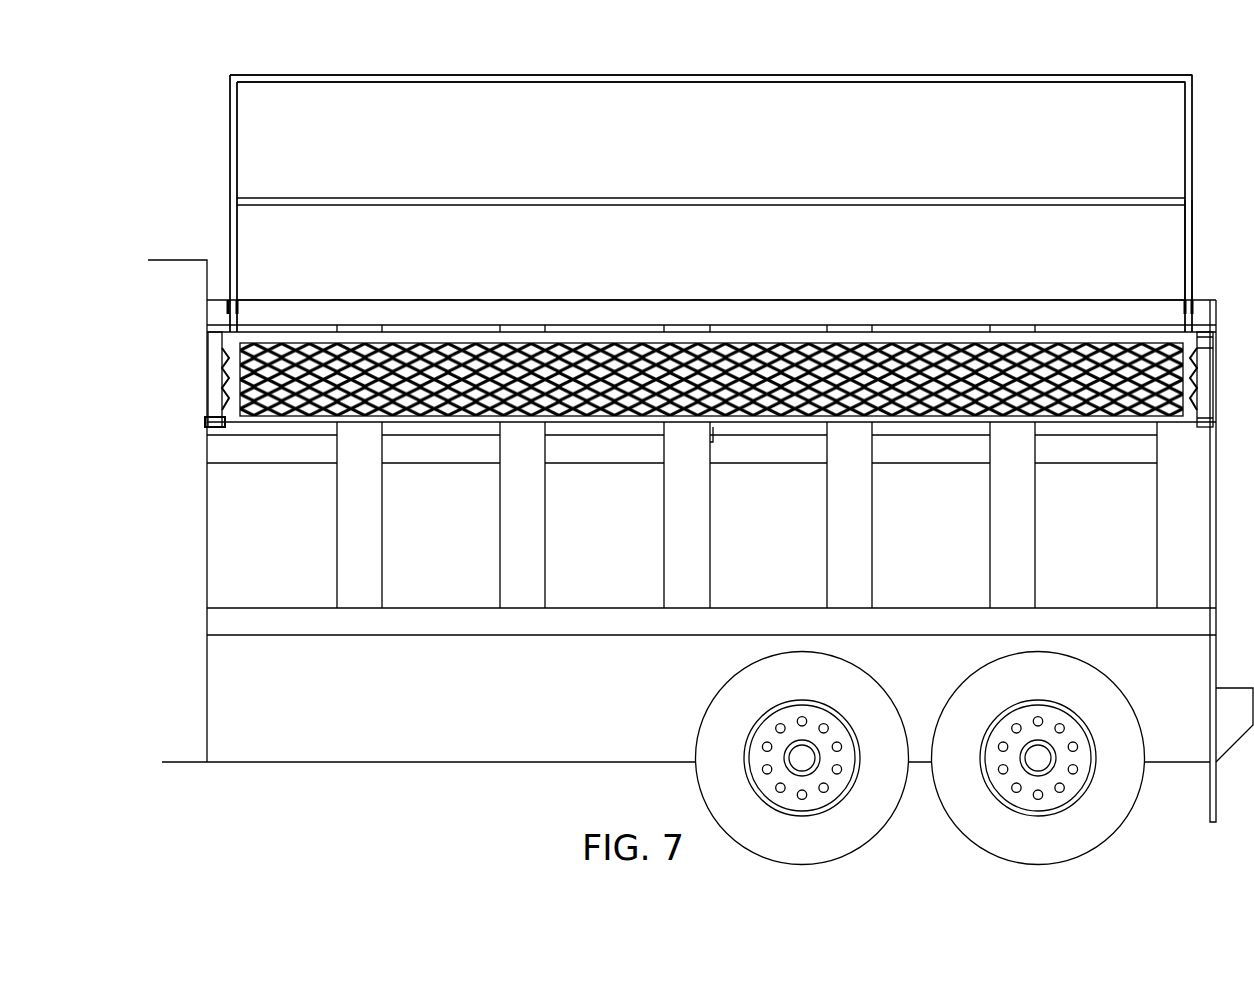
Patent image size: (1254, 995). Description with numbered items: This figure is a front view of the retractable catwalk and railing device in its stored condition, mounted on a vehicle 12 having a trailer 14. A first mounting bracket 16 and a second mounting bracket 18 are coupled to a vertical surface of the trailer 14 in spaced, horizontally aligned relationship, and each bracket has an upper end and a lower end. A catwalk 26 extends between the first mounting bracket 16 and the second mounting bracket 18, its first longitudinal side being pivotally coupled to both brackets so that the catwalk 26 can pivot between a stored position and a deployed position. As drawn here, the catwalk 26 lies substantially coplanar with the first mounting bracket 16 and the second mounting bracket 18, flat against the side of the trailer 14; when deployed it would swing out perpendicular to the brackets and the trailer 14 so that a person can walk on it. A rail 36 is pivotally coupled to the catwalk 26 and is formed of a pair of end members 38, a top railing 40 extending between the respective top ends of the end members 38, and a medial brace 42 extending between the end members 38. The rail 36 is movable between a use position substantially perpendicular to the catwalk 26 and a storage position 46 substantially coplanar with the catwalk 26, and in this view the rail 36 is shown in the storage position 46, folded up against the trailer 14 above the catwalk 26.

The vehicle 12 is at (197, 226).
The trailer 14 is at (1192, 504).
The first mounting bracket 16 is at (213, 383).
The second mounting bracket 18 is at (1208, 383).
The catwalk 26 is at (908, 340).
The rail 36 is at (698, 200).
The end members 38 is at (232, 148).
The top railing 40 is at (867, 76).
The medial brace 42 is at (771, 200).
The storage position 46 is at (1218, 232).